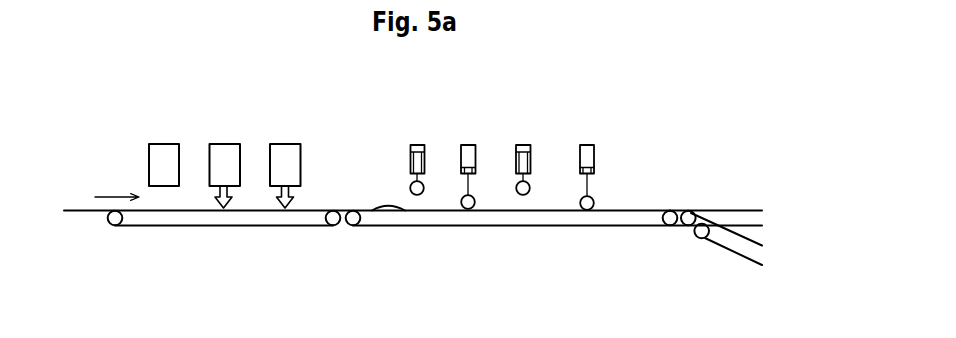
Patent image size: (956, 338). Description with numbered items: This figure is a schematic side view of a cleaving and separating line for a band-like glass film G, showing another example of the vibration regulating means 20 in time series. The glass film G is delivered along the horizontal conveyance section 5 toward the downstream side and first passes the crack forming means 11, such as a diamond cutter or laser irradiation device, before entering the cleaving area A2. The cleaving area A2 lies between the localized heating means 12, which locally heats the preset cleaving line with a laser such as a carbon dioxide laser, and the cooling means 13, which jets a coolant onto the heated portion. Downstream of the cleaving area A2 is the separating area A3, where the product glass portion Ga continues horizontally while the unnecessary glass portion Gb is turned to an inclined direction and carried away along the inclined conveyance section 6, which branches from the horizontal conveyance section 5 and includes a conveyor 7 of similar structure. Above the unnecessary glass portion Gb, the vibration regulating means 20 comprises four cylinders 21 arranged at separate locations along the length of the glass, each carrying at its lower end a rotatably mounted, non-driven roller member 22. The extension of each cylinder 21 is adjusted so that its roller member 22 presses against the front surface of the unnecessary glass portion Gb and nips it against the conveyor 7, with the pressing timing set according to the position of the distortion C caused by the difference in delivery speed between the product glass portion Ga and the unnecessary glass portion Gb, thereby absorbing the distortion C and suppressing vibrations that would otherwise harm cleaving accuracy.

The horizontal conveyance section 5 is at (195, 251).
The inclined conveyance section 6 is at (730, 264).
The conveyor 7 is at (285, 233).
The crack forming means 11 is at (167, 152).
The localized heating means 12 is at (222, 152).
The cooling means 13 is at (290, 152).
The vibration regulating means 20 is at (537, 187).
The cylinder 21 is at (461, 157).
The roller member 22 is at (582, 207).
The cleaving area A2 is at (251, 181).
The separating area A3 is at (678, 186).
The distortion C is at (387, 202).
The glass film G is at (83, 212).
The product glass portion Ga is at (737, 209).
The unnecessary glass portion Gb is at (345, 210).